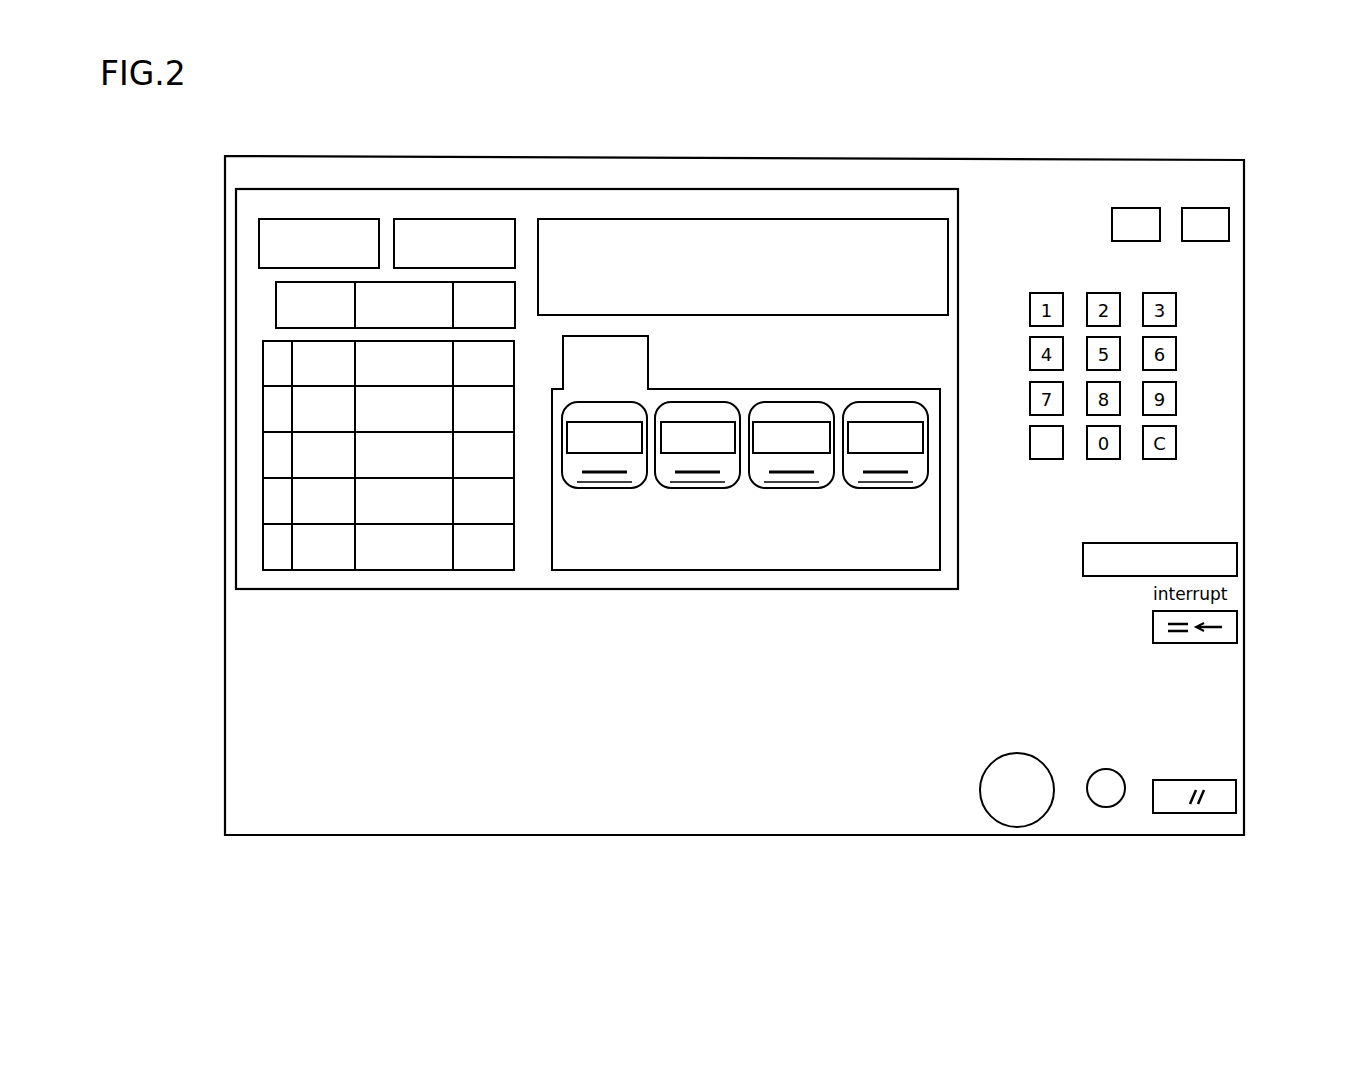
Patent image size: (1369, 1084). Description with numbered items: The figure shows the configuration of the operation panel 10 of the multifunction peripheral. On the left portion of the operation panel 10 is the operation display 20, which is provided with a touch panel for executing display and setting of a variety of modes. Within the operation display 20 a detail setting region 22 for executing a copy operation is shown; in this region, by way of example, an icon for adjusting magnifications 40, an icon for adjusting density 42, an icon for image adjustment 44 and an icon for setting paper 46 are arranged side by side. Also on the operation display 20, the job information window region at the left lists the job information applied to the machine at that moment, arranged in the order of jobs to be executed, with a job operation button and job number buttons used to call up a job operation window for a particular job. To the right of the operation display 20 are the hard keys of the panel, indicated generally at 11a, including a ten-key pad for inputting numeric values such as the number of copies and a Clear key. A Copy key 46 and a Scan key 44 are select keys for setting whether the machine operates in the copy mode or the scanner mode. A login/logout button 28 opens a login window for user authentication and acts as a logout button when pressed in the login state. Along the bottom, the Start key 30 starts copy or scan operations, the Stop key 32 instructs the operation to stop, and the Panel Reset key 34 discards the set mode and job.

The operation panel 10 is at (287, 157).
The operation display 20 is at (611, 188).
The detail setting region 22 is at (572, 337).
The login/logout button 28 is at (1210, 541).
The Start key 30 is at (1016, 813).
The Stop key 32 is at (1104, 798).
The Panel Reset key 34 is at (1167, 803).
The zoom key 40 is at (603, 488).
The density key 42 is at (700, 488).
The Scan key 44 is at (792, 488).
The Copy key 46 is at (886, 488).
The hard key operation section 11a is at (953, 778).